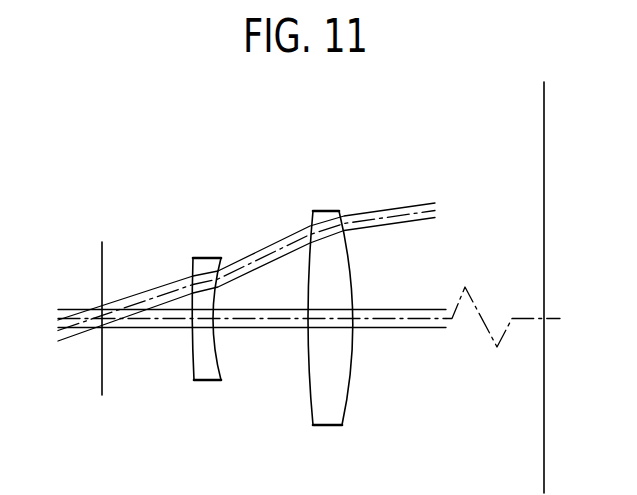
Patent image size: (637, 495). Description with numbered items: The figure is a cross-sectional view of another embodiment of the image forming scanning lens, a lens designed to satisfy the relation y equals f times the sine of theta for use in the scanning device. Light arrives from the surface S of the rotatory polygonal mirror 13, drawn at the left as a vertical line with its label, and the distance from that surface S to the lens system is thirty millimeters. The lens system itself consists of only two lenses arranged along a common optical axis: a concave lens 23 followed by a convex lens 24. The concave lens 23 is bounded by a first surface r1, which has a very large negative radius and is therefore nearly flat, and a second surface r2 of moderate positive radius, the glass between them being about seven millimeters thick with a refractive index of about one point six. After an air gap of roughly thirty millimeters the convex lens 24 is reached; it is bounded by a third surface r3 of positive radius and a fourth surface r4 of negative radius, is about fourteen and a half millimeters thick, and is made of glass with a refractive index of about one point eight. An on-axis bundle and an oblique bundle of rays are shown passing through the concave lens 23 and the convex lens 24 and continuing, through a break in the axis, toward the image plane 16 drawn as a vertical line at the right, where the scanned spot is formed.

The rotatory polygonal mirror 13 is at (103, 377).
The surface of the rotatory polygonal mirror S is at (99, 225).
The image plane 16 is at (541, 108).
The concave lens 23 is at (206, 339).
The convex lens 24 is at (321, 316).
The first lens surface r1 is at (194, 370).
The second lens surface r2 is at (220, 368).
The third lens surface r3 is at (311, 408).
The fourth lens surface r4 is at (343, 347).